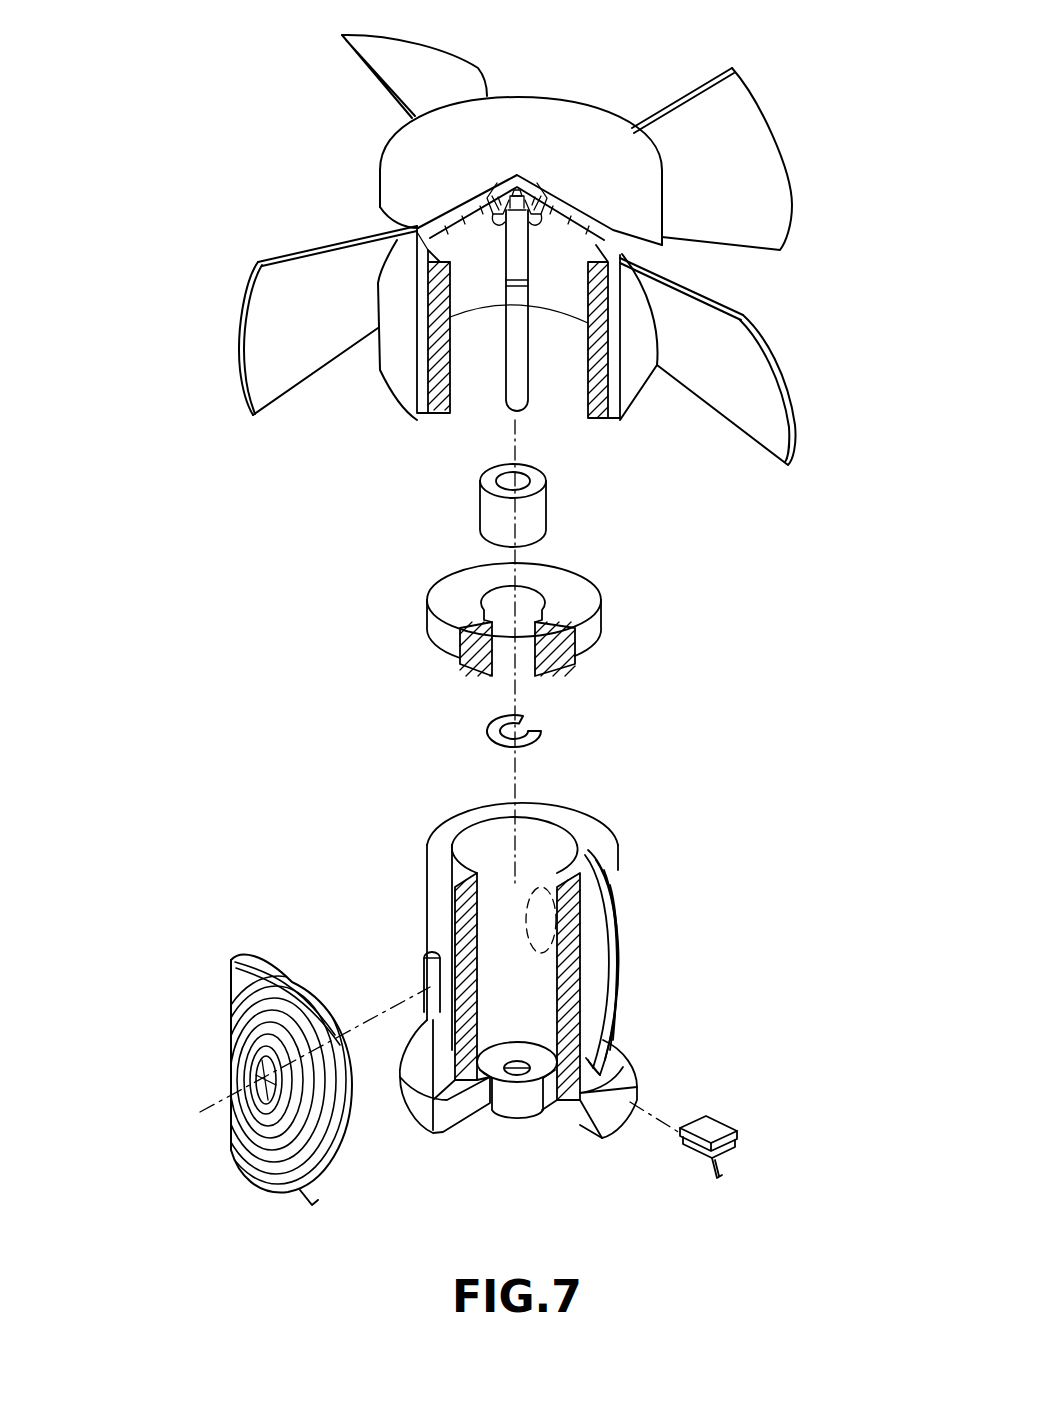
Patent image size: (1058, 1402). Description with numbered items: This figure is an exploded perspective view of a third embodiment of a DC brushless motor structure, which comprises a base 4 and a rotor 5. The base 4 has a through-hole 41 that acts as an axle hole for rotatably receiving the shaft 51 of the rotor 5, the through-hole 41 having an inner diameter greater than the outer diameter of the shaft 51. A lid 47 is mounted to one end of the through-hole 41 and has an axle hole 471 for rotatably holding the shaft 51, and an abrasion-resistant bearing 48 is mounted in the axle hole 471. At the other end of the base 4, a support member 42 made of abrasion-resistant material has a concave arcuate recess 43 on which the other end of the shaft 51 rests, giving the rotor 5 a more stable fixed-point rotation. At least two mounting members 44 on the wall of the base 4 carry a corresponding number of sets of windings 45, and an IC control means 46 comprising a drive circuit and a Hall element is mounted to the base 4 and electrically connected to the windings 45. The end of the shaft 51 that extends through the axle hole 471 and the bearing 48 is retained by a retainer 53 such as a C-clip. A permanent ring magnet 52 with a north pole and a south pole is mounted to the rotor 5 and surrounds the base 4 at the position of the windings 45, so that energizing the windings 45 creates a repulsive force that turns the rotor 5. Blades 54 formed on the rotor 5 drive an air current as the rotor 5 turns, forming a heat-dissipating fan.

The base 4 is at (585, 835).
The rotor 5 is at (548, 103).
The through-hole 41 is at (480, 838).
The support member 42 is at (525, 1100).
The concave arcuate recess 43 is at (512, 1073).
The mounting member 44 is at (425, 970).
The windings 45 is at (615, 900).
The IC control means 46 is at (715, 1135).
The lid 47 is at (585, 645).
The axle hole 471 is at (498, 607).
The bearing 48 is at (540, 508).
The shaft 51 is at (524, 388).
The permanent ring magnet 52 is at (440, 385).
The retainer 53 is at (485, 735).
The blades 54 is at (745, 410).